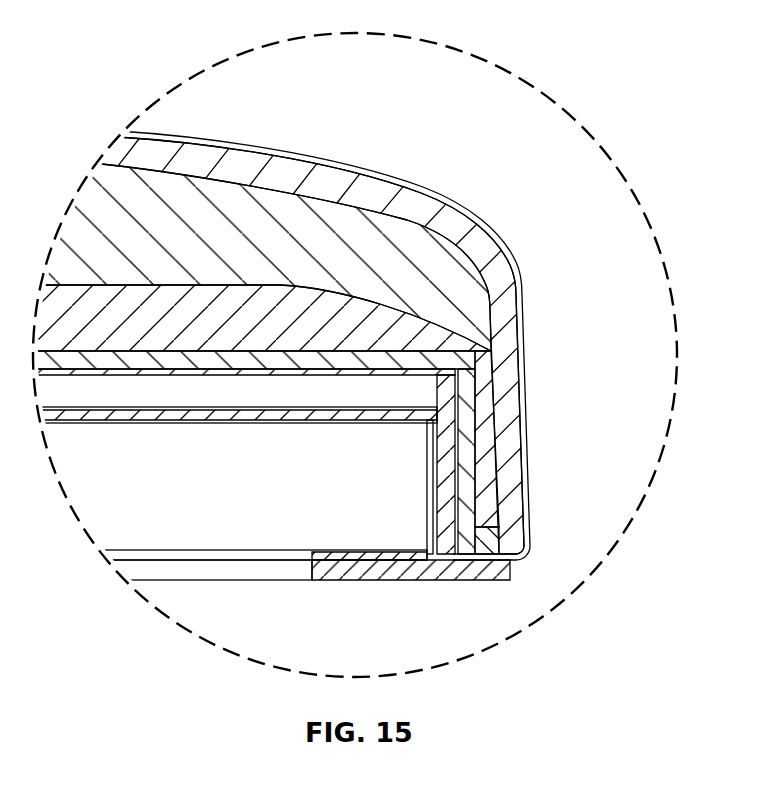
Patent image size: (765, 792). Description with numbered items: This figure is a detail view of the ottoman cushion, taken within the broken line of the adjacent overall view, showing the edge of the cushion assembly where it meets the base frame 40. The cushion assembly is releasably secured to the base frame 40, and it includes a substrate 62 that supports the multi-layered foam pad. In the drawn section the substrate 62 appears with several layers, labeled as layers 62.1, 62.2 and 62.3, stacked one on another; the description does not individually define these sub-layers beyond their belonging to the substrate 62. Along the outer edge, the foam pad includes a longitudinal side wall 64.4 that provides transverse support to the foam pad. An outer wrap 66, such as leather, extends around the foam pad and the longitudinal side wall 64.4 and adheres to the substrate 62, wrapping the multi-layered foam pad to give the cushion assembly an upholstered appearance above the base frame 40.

The outer wrap 66 is at (237, 140).
The outer shell layer 62.3 is at (352, 183).
The middle shell layer 62.2 is at (455, 288).
The inner shell layer 62.1 is at (440, 336).
The substrate 62 is at (467, 395).
The longitudinal side wall 64.4 is at (508, 477).
The base frame 40 is at (405, 581).